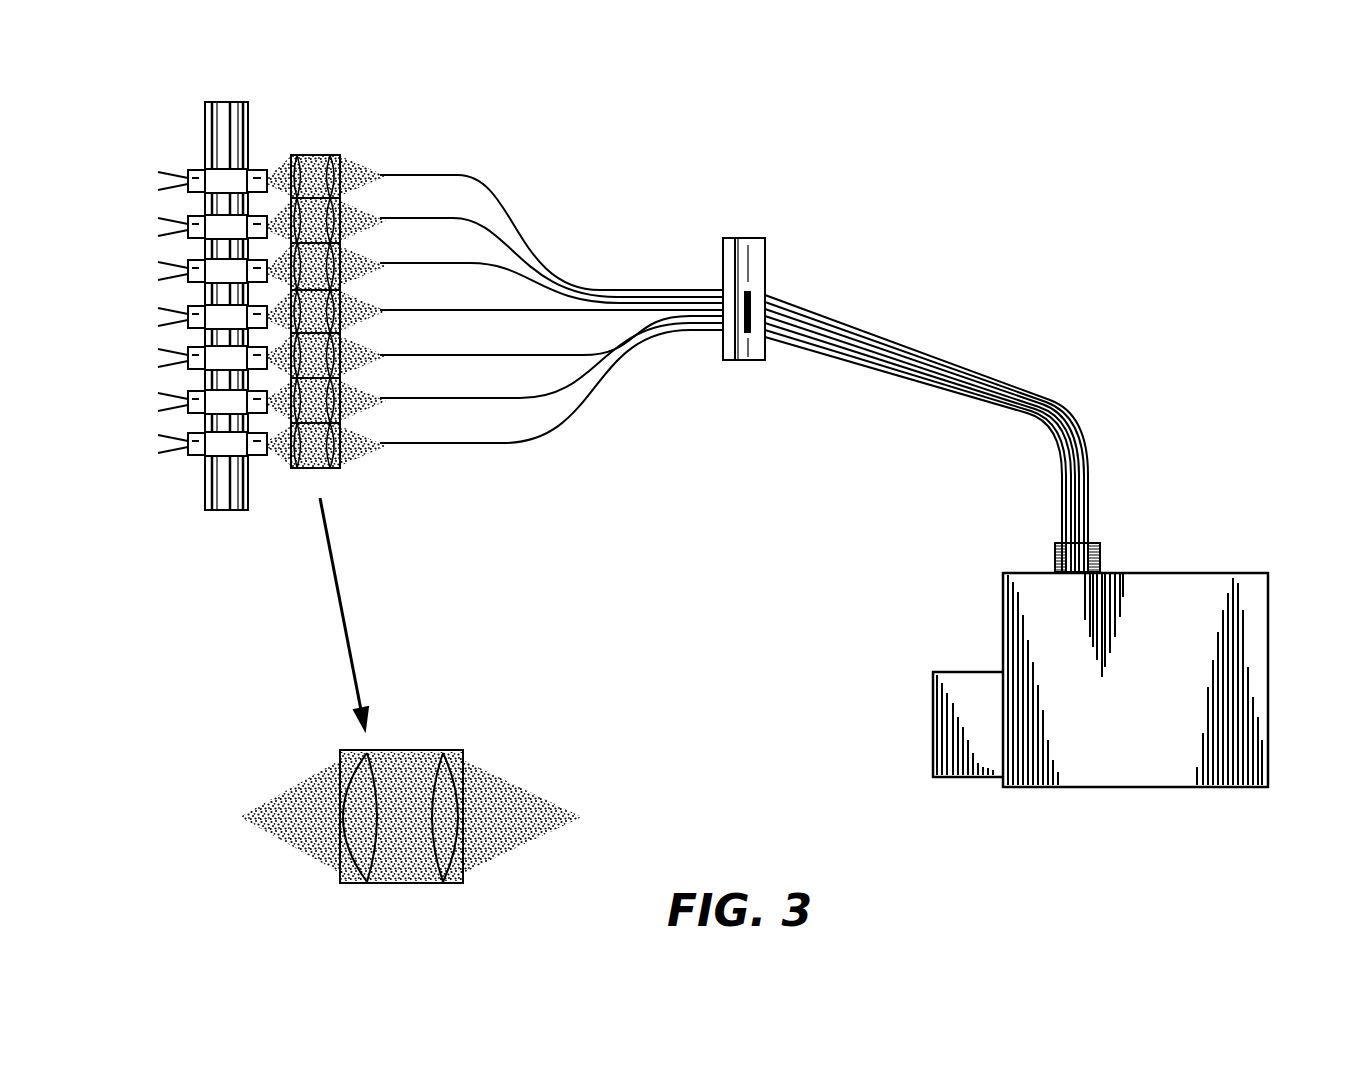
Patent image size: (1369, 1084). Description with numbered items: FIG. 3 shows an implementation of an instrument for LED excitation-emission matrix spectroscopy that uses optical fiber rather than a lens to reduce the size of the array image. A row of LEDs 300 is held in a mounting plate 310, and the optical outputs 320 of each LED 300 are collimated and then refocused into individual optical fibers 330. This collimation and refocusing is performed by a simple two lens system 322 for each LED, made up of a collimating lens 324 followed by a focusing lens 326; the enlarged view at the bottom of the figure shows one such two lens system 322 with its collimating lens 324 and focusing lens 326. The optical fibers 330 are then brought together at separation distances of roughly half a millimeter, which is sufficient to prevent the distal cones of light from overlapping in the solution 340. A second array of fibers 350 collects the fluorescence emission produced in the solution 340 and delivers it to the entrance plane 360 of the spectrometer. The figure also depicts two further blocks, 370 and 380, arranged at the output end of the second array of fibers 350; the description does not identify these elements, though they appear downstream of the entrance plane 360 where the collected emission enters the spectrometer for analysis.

The LED 300 is at (170, 172).
The mounting plate 310 is at (222, 101).
The optical outputs 320 is at (312, 153).
The two lens system 322 is at (411, 831).
The collimating lens 324 is at (345, 772).
The focusing lens 326 is at (463, 772).
The optical fibers 330 is at (415, 172).
The solution 340 is at (737, 238).
The second array of fibers 350 is at (933, 352).
The entrance plane 360 is at (1100, 555).
The receiver / processing unit 370 is at (1268, 722).
The auxiliary unit 380 is at (933, 715).